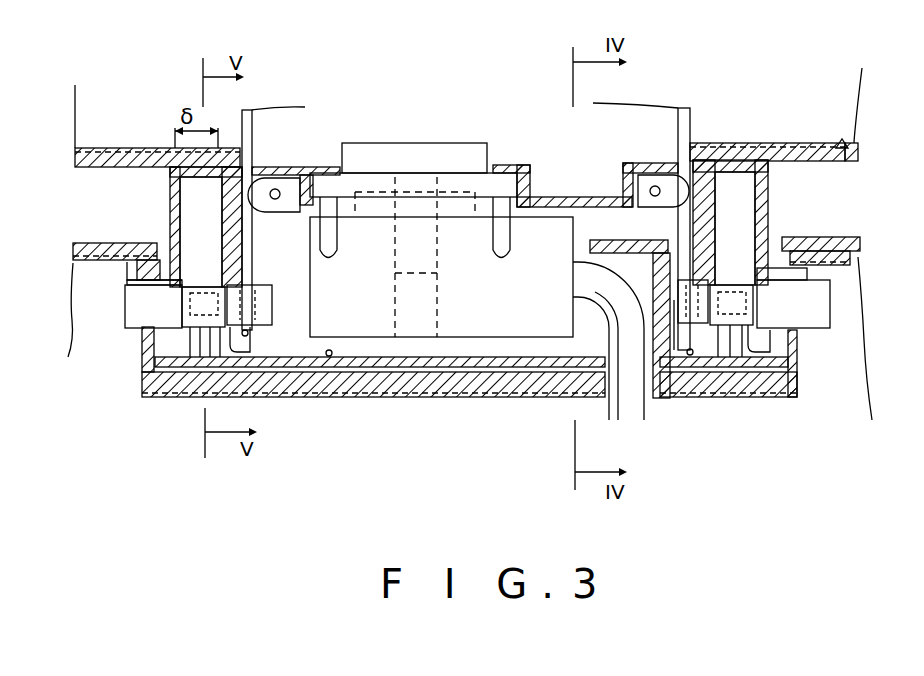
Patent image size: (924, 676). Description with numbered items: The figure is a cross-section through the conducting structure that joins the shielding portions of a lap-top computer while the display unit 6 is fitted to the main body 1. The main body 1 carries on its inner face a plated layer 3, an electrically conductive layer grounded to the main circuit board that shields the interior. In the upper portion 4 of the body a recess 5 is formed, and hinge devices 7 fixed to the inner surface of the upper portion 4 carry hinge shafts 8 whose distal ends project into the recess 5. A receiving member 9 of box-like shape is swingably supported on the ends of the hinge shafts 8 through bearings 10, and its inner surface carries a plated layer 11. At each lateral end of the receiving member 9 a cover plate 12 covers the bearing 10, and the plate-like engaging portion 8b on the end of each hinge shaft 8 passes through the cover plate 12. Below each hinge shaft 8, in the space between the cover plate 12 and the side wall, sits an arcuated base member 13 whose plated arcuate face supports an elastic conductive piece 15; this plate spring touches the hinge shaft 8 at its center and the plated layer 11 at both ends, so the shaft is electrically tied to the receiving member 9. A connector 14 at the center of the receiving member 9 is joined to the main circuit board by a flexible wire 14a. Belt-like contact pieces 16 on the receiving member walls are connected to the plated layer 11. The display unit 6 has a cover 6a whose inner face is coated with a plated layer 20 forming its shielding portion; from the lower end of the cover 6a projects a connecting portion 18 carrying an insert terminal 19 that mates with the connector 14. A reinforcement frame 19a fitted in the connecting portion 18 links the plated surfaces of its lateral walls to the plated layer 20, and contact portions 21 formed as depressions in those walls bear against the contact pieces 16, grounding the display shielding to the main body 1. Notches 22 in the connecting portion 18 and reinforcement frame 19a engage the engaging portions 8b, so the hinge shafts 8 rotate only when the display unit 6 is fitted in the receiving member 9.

The main body 1 is at (850, 233).
The plated layer 3 is at (790, 357).
The upper portion 4 is at (808, 238).
The recess 5 is at (416, 372).
The display unit 6 is at (863, 96).
The cover 6a is at (851, 152).
The hinge device 7 is at (130, 338).
The hinge shaft 8 is at (147, 333).
The engaging portion 8b is at (268, 318).
The receiving member 9 is at (170, 186).
The bearing 10 is at (137, 262).
The plated layer 11 is at (331, 357).
The cover plate 12 is at (228, 234).
The base member 13 is at (195, 328).
The connector 14 is at (510, 330).
The flexible wire 14a is at (612, 414).
The conductive piece 15 is at (232, 395).
The contact piece 16 is at (437, 278).
The connecting portion 18 is at (687, 332).
The insert terminal 19 is at (440, 146).
The reinforcement frame 19a is at (690, 125).
The plated layer 20 is at (840, 160).
The contact portion 21 is at (397, 293).
The notch 22 is at (248, 334).